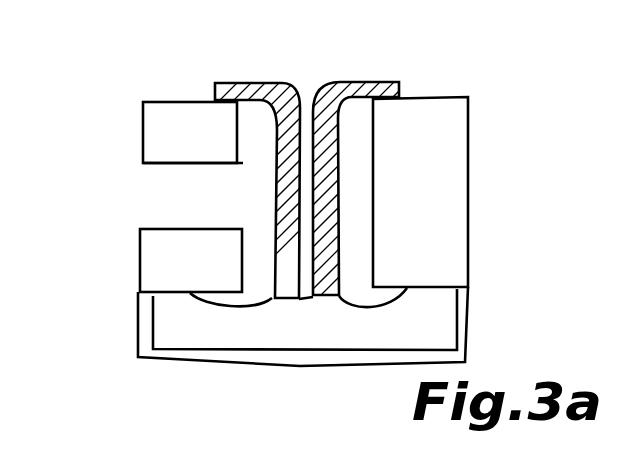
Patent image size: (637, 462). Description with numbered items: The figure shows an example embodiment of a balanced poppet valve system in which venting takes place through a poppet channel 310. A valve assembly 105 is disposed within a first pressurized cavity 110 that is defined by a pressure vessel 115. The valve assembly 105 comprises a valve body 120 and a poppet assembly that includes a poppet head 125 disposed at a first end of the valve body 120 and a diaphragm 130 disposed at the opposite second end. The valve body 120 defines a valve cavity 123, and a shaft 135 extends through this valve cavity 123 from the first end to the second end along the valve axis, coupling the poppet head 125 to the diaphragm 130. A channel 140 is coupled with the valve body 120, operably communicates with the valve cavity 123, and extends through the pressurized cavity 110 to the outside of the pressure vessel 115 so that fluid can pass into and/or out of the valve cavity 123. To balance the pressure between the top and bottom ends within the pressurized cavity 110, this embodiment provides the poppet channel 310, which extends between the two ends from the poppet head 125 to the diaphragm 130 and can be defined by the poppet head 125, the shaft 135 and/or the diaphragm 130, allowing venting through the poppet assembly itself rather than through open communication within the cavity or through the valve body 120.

The valve assembly 105 is at (509, 88).
The first pressurized cavity 110 is at (433, 324).
The pressure vessel 115 is at (136, 347).
The valve body 120 is at (141, 118).
The valve cavity 123 is at (358, 204).
The poppet head 125 is at (400, 82).
The diaphragm 130 is at (232, 308).
The shaft 135 is at (272, 200).
The channel 140 is at (142, 163).
The poppet channel 310 is at (303, 78).